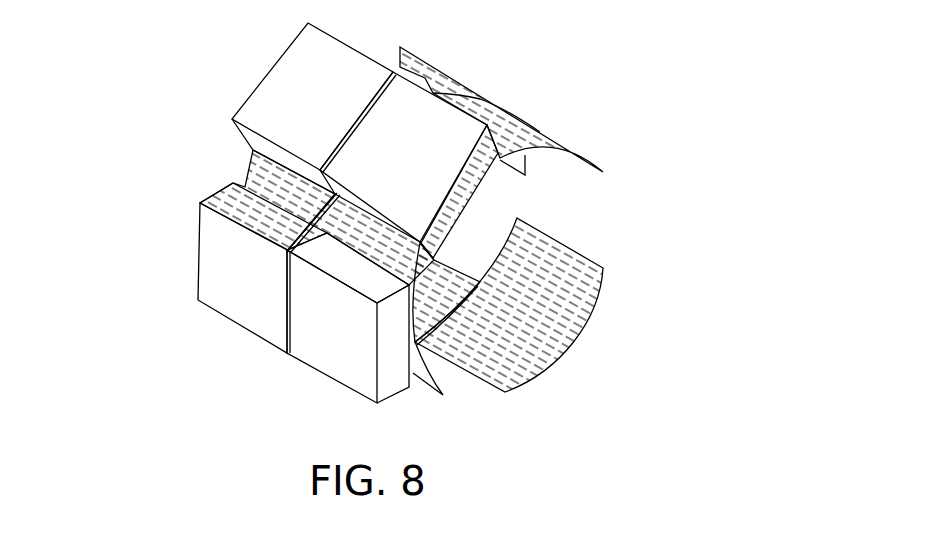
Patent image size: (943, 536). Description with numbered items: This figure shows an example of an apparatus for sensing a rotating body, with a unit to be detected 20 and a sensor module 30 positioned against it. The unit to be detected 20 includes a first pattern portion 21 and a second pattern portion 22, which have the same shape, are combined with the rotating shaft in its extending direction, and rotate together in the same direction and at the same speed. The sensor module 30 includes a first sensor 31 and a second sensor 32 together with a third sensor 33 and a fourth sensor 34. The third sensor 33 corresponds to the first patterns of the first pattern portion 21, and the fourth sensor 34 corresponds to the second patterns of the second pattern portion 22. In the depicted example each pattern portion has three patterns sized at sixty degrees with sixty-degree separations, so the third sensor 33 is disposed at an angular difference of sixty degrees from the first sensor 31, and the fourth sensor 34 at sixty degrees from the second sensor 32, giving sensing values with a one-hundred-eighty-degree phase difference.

The unit to be detected 20 is at (455, 221).
The first pattern portion 21 is at (450, 80).
The second pattern portion 22 is at (543, 125).
The sensor module 30 is at (272, 213).
The first sensor 31 is at (207, 250).
The second sensor 32 is at (257, 318).
The third sensor 33 is at (258, 97).
The fourth sensor 34 is at (362, 148).